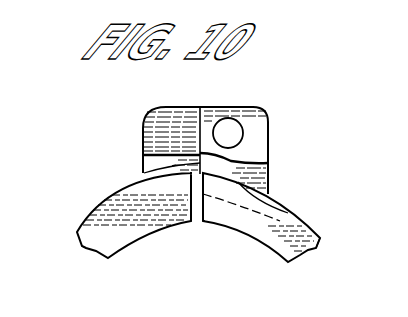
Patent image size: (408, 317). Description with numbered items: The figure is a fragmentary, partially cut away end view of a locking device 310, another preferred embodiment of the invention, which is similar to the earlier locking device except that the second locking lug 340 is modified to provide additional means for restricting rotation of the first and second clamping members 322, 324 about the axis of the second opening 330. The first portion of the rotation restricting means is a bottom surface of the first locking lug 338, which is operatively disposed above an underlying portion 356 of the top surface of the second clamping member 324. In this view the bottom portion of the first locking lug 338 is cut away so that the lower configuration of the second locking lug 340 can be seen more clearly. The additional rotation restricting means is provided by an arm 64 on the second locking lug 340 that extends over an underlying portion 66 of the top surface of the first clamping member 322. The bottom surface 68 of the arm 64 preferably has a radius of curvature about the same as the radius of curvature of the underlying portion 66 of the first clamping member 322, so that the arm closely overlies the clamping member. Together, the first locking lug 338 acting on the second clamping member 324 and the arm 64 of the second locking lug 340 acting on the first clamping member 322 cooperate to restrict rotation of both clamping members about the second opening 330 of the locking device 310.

The first locking lug 338 is at (222, 112).
The locking device 310 is at (100, 203).
The first clamping member 322 is at (98, 231).
The arm 64 is at (153, 154).
The bottom surface 68 is at (168, 166).
The underlying portion 66 is at (175, 166).
The second locking lug 340 is at (270, 174).
The underlying portion 356 is at (275, 200).
The second clamping member 324 is at (312, 232).
The second opening 330 is at (213, 226).